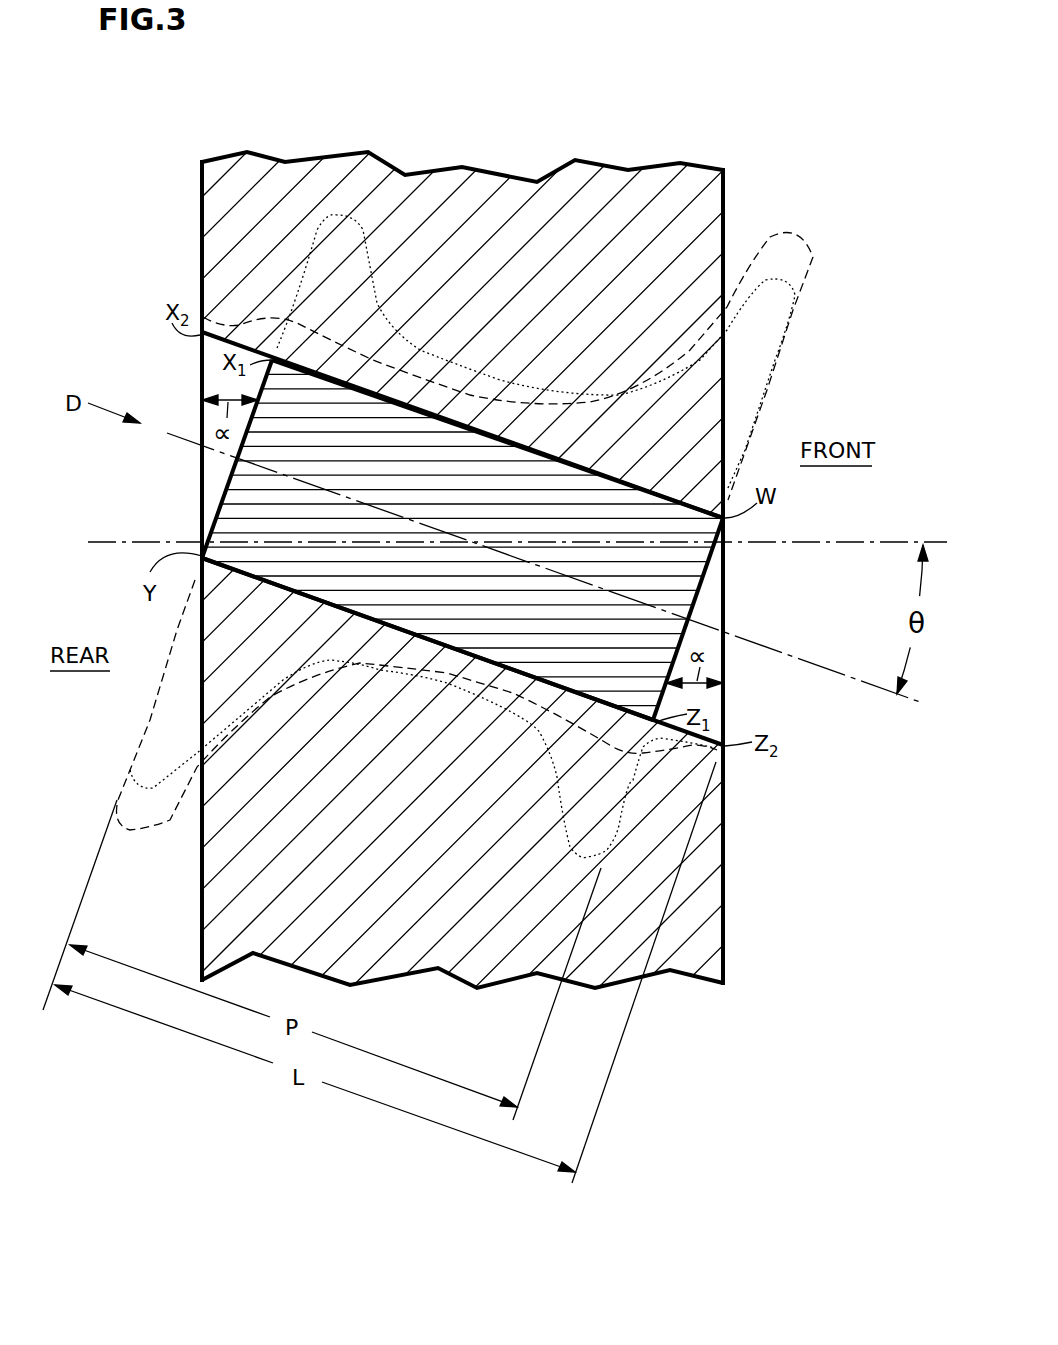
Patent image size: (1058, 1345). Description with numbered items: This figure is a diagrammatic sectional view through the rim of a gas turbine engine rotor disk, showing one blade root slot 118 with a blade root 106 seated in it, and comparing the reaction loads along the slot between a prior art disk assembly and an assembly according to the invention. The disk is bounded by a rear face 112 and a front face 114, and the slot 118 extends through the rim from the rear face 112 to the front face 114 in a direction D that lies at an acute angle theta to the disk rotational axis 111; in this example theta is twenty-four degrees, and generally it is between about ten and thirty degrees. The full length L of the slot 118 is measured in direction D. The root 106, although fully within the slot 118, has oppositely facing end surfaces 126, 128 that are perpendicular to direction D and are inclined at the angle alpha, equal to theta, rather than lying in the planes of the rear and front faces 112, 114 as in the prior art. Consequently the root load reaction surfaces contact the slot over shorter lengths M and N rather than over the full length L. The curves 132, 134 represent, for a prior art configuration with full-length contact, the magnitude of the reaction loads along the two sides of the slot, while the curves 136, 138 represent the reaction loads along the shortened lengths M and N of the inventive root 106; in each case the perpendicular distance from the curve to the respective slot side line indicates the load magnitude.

The root 106 is at (475, 492).
The rotational axis 111 is at (805, 542).
The rear face 112 is at (202, 220).
The front face 114 is at (725, 227).
The blade root slot 118 is at (226, 567).
The end surface 126 is at (229, 482).
The end surface 128 is at (693, 608).
The curve 132 is at (693, 340).
The curve 134 is at (235, 727).
The curve 136 is at (378, 290).
The curve 138 is at (552, 780).